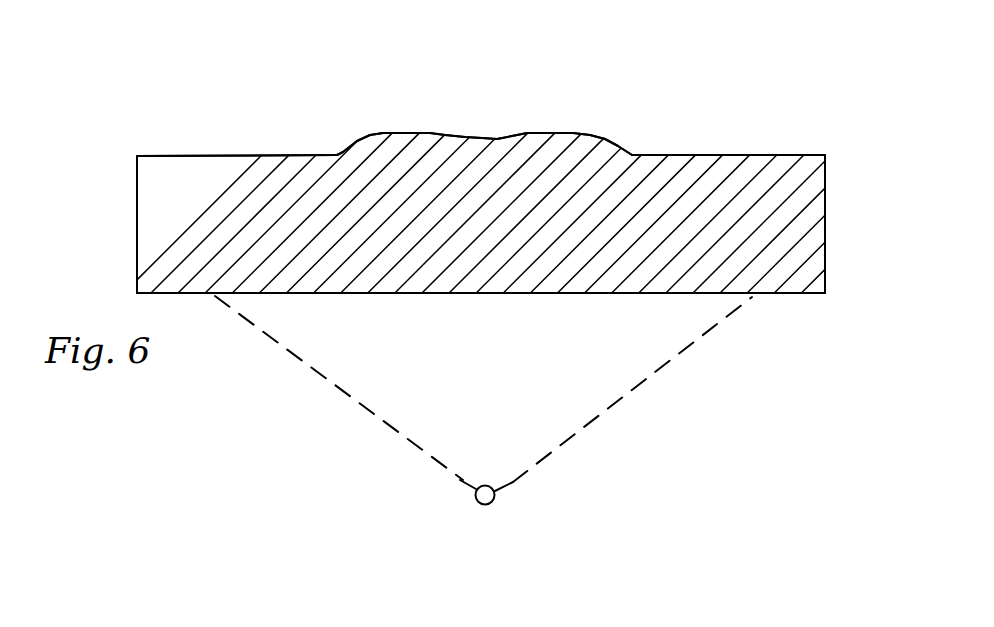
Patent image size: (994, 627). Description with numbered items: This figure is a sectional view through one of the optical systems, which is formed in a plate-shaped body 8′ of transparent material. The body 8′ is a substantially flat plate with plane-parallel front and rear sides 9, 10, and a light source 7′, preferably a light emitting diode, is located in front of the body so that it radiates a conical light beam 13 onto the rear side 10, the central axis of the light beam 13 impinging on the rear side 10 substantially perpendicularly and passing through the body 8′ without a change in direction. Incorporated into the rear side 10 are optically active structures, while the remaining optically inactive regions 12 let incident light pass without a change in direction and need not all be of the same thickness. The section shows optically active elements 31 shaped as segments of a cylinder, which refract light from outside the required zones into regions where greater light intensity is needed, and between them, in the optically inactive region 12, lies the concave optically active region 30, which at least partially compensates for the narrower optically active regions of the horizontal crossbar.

The light source 7′ is at (492, 503).
The plate-shaped body 8′ is at (825, 226).
The front side 9 is at (570, 297).
The rear side 10 is at (740, 153).
The optically inactive region 12 is at (244, 155).
The conical light beam 13 is at (625, 395).
The concave optically active region 30 is at (490, 140).
The optically active element 31 is at (365, 133).